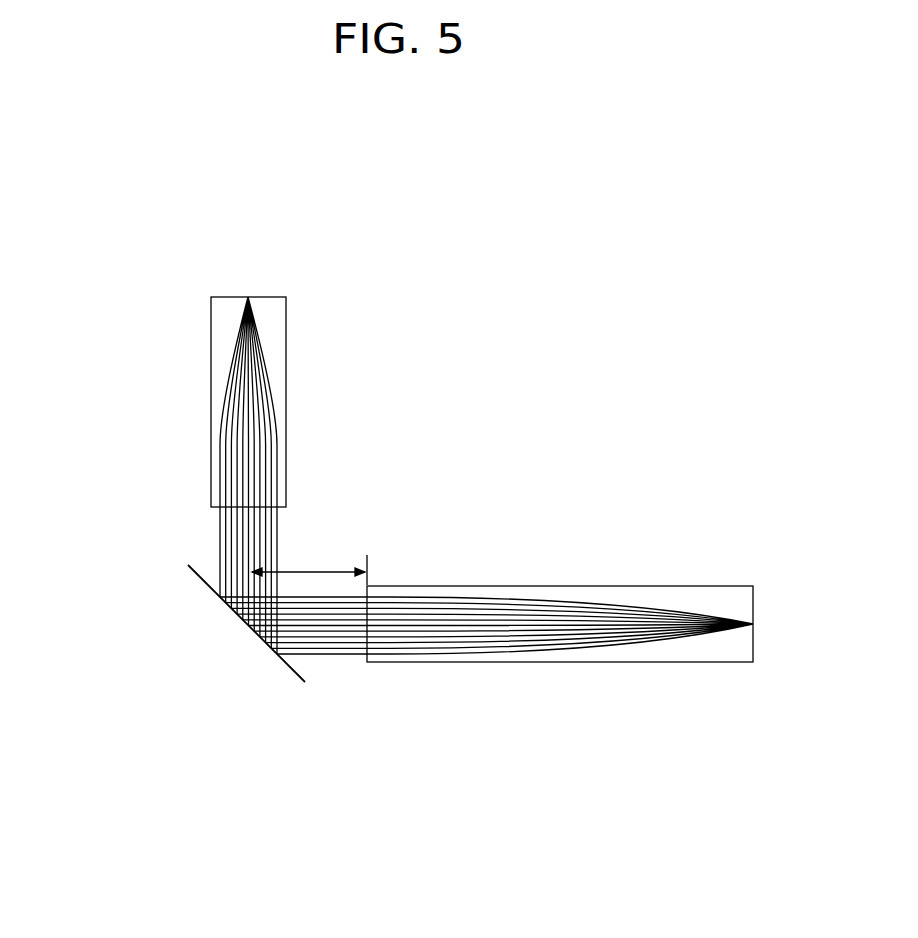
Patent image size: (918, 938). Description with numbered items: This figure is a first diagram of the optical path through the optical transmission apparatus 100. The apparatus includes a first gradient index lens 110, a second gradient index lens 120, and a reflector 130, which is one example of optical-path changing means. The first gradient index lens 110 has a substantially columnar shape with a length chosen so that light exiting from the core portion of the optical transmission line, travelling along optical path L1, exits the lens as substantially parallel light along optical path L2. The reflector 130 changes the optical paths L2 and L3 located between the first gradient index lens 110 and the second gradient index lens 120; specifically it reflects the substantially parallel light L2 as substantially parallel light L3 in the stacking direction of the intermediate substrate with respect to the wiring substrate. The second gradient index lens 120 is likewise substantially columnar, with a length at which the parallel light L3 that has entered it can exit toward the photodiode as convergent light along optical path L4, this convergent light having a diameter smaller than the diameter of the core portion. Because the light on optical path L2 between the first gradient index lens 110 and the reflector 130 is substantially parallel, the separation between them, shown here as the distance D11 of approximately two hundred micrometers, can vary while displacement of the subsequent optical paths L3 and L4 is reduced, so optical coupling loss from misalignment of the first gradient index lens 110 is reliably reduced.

The optical transmission apparatus 100 is at (150, 267).
The first gradient index lens 110 is at (557, 586).
The second gradient index lens 120 is at (286, 337).
The reflector 130 is at (297, 668).
The optical path L1 is at (418, 653).
The optical path L2 is at (330, 655).
The optical path L3 is at (275, 522).
The optical path L4 is at (248, 297).
The distance D11 is at (309, 559).